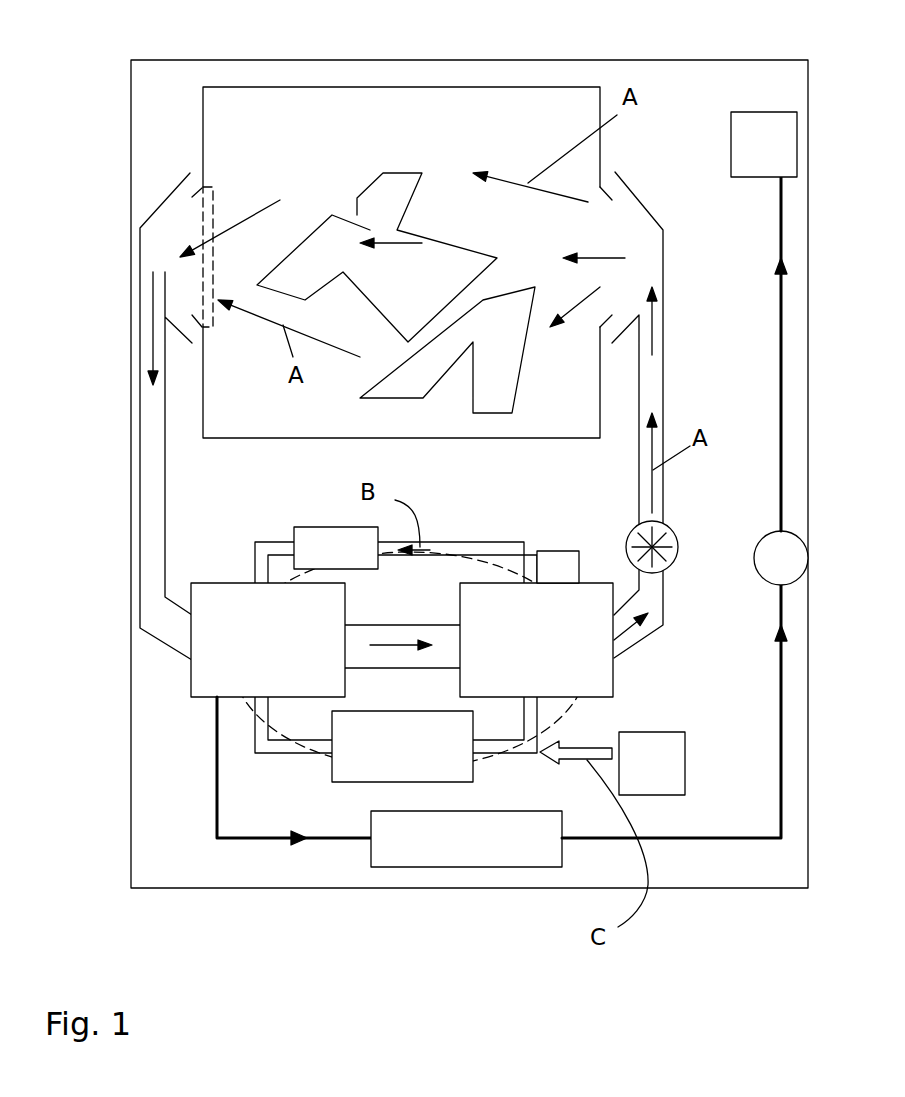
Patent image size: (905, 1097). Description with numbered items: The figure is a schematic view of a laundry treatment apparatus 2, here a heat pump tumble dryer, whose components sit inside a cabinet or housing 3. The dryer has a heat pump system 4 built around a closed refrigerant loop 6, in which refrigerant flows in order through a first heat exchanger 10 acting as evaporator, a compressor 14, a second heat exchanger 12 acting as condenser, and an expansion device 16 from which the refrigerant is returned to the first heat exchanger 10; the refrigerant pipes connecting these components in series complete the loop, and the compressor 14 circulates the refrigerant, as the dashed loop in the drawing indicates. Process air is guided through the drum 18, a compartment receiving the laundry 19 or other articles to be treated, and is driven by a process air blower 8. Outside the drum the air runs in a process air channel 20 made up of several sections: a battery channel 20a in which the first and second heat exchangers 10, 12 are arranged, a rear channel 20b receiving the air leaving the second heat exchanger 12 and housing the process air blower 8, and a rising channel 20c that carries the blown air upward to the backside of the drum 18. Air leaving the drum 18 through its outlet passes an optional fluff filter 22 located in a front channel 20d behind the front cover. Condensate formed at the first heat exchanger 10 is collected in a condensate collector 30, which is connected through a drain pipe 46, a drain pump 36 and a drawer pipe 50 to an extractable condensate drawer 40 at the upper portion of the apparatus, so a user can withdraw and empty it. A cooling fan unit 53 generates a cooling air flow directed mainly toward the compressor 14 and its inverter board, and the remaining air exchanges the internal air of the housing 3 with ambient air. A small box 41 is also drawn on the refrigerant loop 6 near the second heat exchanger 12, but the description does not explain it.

The laundry treatment apparatus 2 is at (144, 88).
The housing 3 is at (528, 888).
The heat pump system 4 is at (200, 743).
The refrigerant loop 6 is at (263, 542).
The process air blower 8 is at (638, 537).
The first heat exchanger 10 is at (244, 653).
The second heat exchanger 12 is at (525, 643).
The compressor 14 is at (383, 755).
The expansion device 16 is at (321, 562).
The drum 18 is at (294, 87).
The laundry 19 is at (472, 310).
The process air channel 20 is at (388, 420).
The battery channel 20a is at (412, 618).
The rear channel 20b is at (655, 603).
The rising channel 20c is at (663, 398).
The front channel 20d is at (155, 422).
The fluff filter 22 is at (210, 270).
The condensate collector 30 is at (466, 839).
The drain pump 36 is at (800, 560).
The condensate drawer 40 is at (749, 157).
The sensor 41 is at (545, 581).
The drain pipe 46 is at (688, 840).
The drawer pipe 50 is at (783, 340).
The cooling fan unit 53 is at (612, 763).